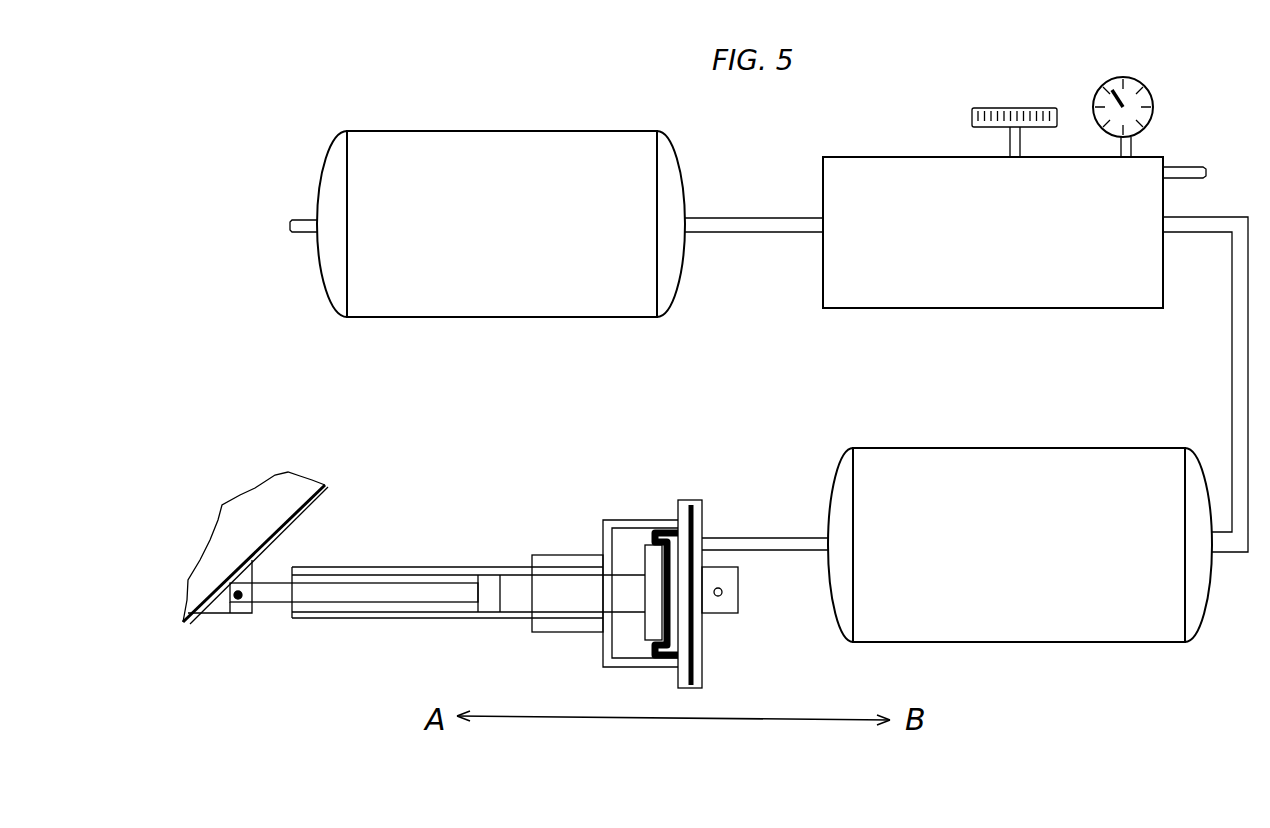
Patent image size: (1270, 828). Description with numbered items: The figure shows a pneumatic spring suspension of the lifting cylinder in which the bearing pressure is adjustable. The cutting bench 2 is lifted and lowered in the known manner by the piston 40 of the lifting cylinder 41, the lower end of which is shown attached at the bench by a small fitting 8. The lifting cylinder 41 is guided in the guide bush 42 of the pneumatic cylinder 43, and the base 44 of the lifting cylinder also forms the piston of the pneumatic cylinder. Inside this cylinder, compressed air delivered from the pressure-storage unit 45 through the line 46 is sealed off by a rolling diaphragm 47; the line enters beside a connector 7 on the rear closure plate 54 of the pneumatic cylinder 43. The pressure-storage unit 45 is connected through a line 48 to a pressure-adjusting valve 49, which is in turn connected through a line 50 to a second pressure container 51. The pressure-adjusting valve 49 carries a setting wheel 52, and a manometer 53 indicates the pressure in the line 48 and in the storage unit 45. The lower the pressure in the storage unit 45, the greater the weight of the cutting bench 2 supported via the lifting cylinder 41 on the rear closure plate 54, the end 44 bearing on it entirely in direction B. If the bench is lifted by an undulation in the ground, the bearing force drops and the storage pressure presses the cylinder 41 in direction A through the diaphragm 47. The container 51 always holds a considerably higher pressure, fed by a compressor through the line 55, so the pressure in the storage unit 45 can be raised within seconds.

The cutting bench 2 is at (244, 503).
The fitting 7 is at (722, 592).
The bracket pin 8 is at (236, 615).
The piston 40 is at (268, 592).
The lifting cylinder 41 is at (397, 574).
The guide bush 42 is at (555, 555).
The pneumatic cylinder 43 is at (612, 520).
The base of the lifting cylinder 44 is at (652, 567).
The pressure-storage unit 45 is at (940, 458).
The line 46 is at (763, 538).
The rolling diaphragm 47 is at (652, 656).
The line 48 is at (1230, 376).
The pressure-adjusting valve 49 is at (908, 296).
The line 50 is at (728, 218).
The second pressure container 51 is at (492, 152).
The setting wheel 52 is at (1013, 115).
The manometer 53 is at (1152, 92).
The rear closure plate 54 is at (688, 616).
The line 55 is at (302, 220).